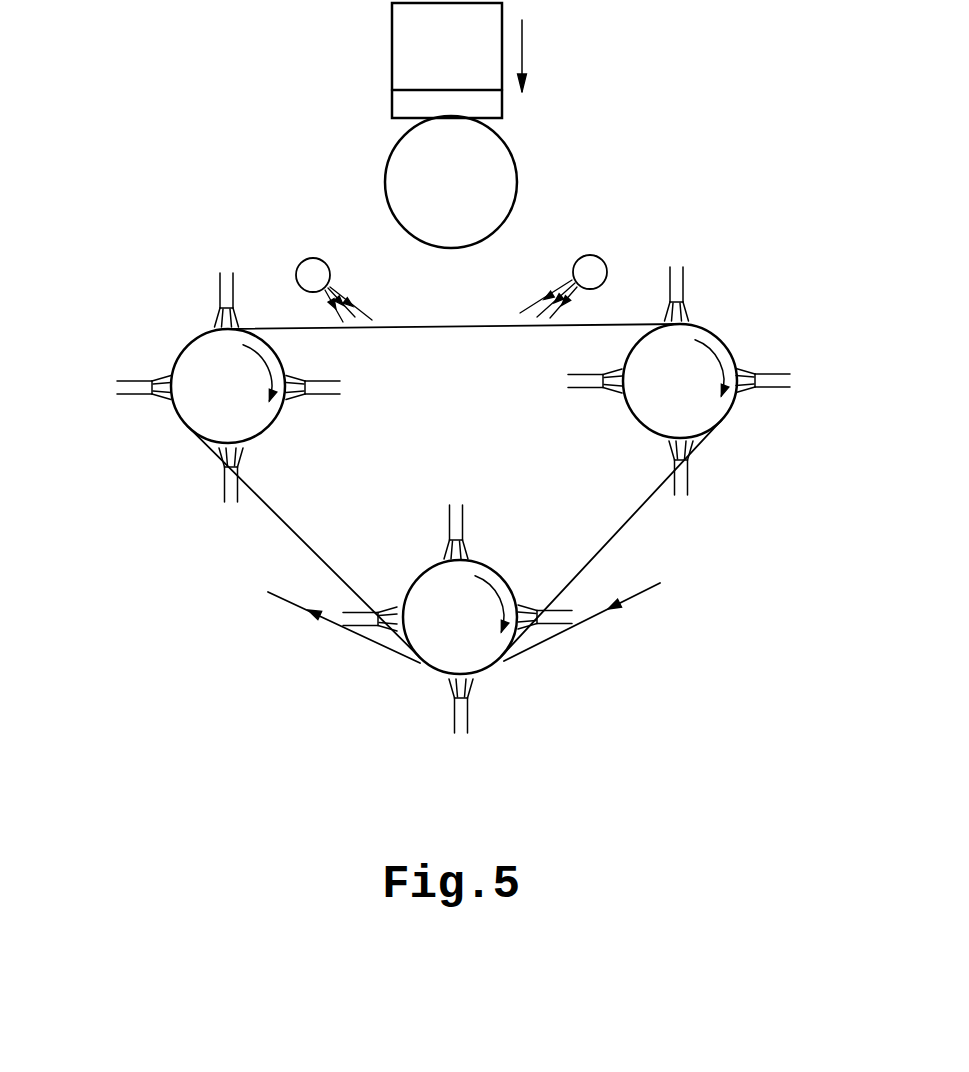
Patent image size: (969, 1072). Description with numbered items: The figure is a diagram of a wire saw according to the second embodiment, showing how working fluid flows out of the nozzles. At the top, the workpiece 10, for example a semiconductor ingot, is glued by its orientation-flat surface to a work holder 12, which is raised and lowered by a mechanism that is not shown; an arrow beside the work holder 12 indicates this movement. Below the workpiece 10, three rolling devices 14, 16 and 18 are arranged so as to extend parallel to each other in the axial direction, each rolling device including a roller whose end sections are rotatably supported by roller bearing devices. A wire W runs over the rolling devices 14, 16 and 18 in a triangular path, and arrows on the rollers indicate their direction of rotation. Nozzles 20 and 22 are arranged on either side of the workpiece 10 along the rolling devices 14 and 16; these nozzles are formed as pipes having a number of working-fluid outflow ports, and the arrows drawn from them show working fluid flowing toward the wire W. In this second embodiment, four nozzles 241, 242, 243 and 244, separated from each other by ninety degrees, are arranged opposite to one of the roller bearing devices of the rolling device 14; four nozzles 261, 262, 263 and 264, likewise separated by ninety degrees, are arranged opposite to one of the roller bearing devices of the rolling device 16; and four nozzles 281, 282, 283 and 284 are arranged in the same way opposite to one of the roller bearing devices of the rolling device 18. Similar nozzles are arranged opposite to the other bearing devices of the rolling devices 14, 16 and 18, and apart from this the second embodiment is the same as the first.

The workpiece 10 is at (517, 154).
The work holder 12 is at (393, 62).
The rolling device 14 is at (277, 420).
The rolling device 16 is at (633, 420).
The rolling device 18 is at (433, 565).
The nozzle 20 is at (328, 263).
The nozzle 22 is at (605, 256).
The nozzle 241 is at (234, 290).
The nozzle 242 is at (134, 381).
The nozzle 243 is at (237, 490).
The nozzle 244 is at (323, 381).
The nozzle 261 is at (685, 278).
The nozzle 262 is at (595, 375).
The nozzle 263 is at (688, 480).
The nozzle 264 is at (773, 375).
The nozzle 281 is at (463, 523).
The nozzle 282 is at (378, 612).
The nozzle 283 is at (467, 716).
The nozzle 284 is at (538, 612).
The web W is at (378, 645).